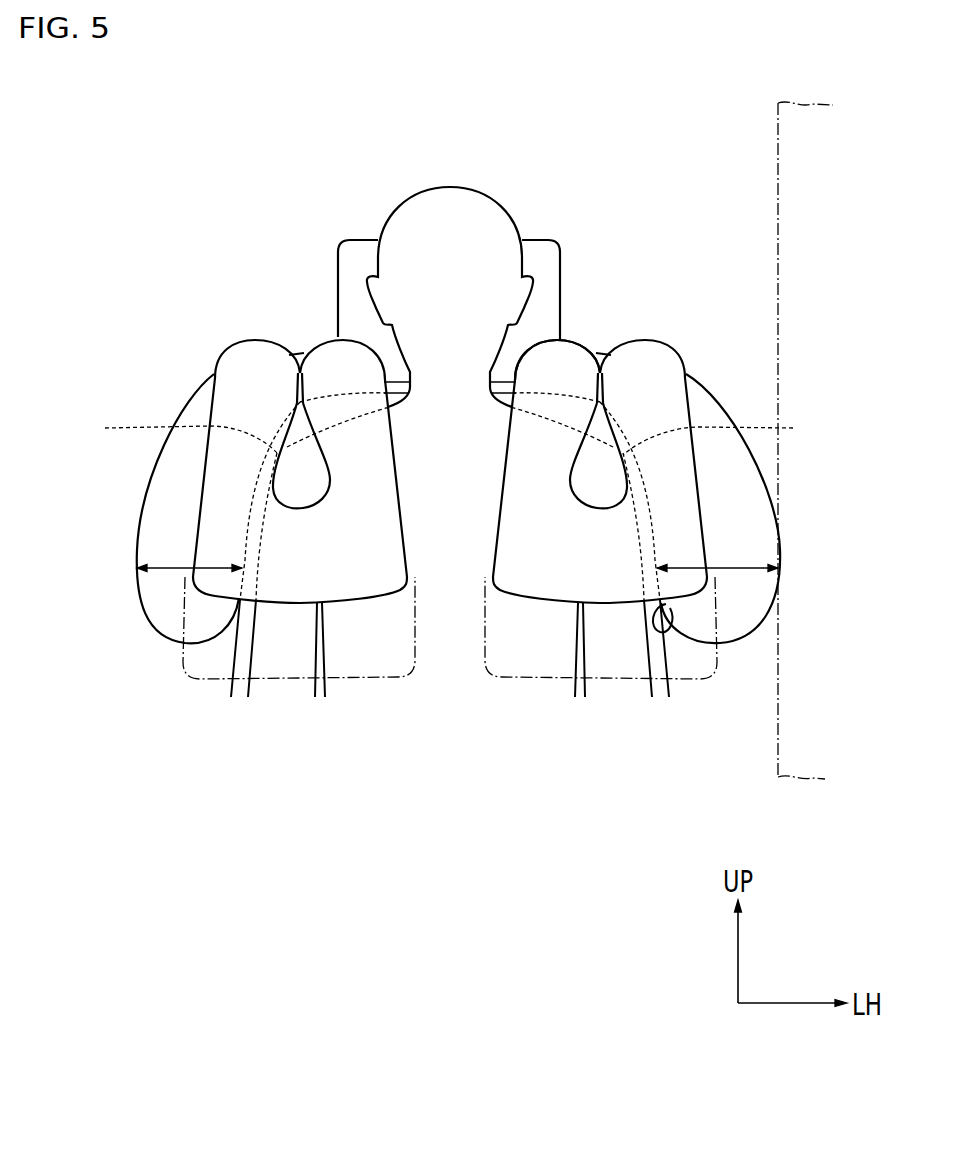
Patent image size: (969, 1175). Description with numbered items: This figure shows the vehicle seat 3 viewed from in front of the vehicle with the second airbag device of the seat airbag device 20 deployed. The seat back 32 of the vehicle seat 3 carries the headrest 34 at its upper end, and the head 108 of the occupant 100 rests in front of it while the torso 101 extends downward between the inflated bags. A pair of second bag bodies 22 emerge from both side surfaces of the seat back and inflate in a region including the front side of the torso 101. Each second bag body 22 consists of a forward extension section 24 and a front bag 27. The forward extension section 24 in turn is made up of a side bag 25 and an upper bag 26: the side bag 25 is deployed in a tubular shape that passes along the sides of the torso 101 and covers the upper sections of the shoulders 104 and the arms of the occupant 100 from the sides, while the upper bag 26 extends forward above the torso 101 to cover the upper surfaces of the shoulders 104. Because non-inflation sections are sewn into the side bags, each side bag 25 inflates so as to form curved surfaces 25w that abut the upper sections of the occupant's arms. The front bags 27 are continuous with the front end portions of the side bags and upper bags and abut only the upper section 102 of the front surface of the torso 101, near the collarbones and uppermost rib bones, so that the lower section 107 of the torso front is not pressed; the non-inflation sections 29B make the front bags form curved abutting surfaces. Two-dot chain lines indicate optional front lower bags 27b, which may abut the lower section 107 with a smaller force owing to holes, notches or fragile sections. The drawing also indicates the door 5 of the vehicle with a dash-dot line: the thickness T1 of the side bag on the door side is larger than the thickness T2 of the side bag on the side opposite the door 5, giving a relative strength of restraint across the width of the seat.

The vehicle seat 3 is at (560, 275).
The door 5 is at (778, 187).
The seat airbag device 20 is at (682, 356).
The second bag bodies 22 is at (213, 366).
The forward extension section 24 is at (463, 424).
The side bag 25 is at (160, 630).
The curved surfaces 25w is at (665, 628).
The upper bag 26 is at (322, 338).
The front bag 27 is at (348, 590).
The front lower bag 27b is at (372, 680).
The non-inflation section 29B is at (297, 490).
The seat back 32 is at (667, 662).
The headrest 34 is at (533, 253).
The occupant 100 is at (655, 712).
The torso 101 is at (317, 668).
The upper section of a front surface of the torso 102 is at (448, 463).
The shoulders 104 is at (448, 424).
The lower section of a front surface of the torso 107 is at (435, 623).
The head of occupant 108 is at (448, 187).
The thickness of side bag T1 is at (737, 567).
The thickness of side bag T2 is at (160, 565).